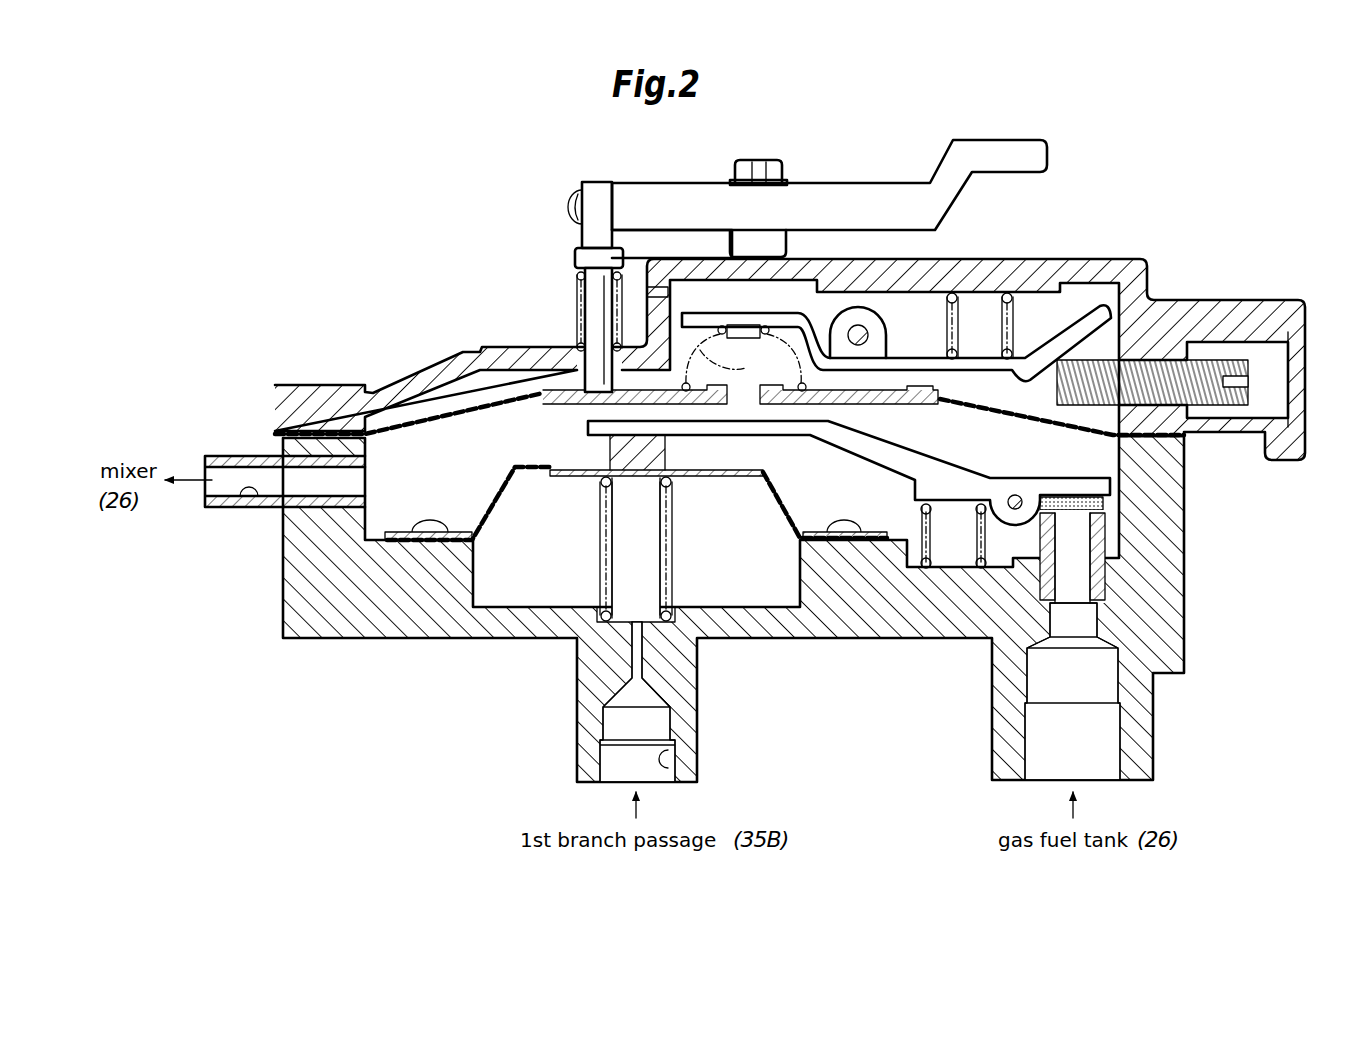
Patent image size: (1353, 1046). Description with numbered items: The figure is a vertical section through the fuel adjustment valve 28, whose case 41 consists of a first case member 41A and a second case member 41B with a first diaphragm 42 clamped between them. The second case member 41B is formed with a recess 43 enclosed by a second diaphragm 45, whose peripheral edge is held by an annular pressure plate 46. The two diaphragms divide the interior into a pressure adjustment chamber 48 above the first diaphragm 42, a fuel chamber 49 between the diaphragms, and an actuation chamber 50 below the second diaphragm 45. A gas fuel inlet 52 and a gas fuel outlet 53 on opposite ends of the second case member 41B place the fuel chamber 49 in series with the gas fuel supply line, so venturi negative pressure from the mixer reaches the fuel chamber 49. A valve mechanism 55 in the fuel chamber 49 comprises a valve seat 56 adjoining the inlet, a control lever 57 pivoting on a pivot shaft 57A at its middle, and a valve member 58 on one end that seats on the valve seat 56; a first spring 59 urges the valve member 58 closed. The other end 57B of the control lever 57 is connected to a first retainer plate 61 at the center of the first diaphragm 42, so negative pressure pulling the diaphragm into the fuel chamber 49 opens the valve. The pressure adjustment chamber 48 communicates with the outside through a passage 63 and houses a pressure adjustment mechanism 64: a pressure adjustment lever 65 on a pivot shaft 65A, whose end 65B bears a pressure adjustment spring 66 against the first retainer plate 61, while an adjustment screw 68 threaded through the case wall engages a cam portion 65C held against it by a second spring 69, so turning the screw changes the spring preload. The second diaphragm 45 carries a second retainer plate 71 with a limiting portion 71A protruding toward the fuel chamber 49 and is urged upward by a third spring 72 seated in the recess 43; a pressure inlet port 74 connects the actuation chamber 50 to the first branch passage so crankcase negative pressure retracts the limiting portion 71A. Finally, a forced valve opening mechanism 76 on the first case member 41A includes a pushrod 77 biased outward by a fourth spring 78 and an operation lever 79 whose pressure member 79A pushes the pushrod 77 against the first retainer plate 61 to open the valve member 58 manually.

The fuel adjustment valve 28 is at (347, 212).
The case 41 is at (744, 520).
The first case member 41A is at (331, 383).
The second case member 41B is at (362, 640).
The first diaphragm 42 is at (417, 428).
The recess 43 is at (510, 606).
The second diaphragm 45 is at (490, 517).
The annular pressure plate 46 is at (402, 531).
The pressure adjustment chamber 48 is at (495, 397).
The fuel chamber 49 is at (520, 451).
The actuation chamber 50 is at (739, 532).
The gas fuel inlet 52 is at (1028, 772).
The gas fuel outlet 53 is at (239, 488).
The valve mechanism 55 is at (852, 462).
The valve seat 56 is at (1108, 500).
The control lever 57 is at (895, 455).
The pivot shaft 57A is at (1015, 494).
The other end of the control lever 57B is at (600, 436).
The valve member 58 is at (1078, 497).
The first spring 59 is at (935, 545).
The first retainer plate 61 is at (863, 405).
The passage 63 is at (643, 300).
The pressure adjustment mechanism 64 is at (790, 308).
The pressure adjustment lever 65 is at (918, 358).
The pivot shaft 65A is at (861, 328).
The end of the pressure adjustment lever 65B is at (694, 311).
The cam portion 65C is at (1085, 322).
The pressure adjustment spring 66 is at (725, 370).
The adjustment screw 68 is at (1218, 368).
The second spring 69 is at (1010, 312).
The second retainer plate 71 is at (583, 478).
The limiting portion 71A is at (666, 453).
The third spring 72 is at (673, 554).
The pressure inlet port 74 is at (668, 758).
The forced valve opening mechanism 76 is at (762, 241).
The pushrod 77 is at (597, 332).
The fourth spring 78 is at (580, 290).
The operation lever 79 is at (1000, 140).
The pressure member 79A is at (590, 243).